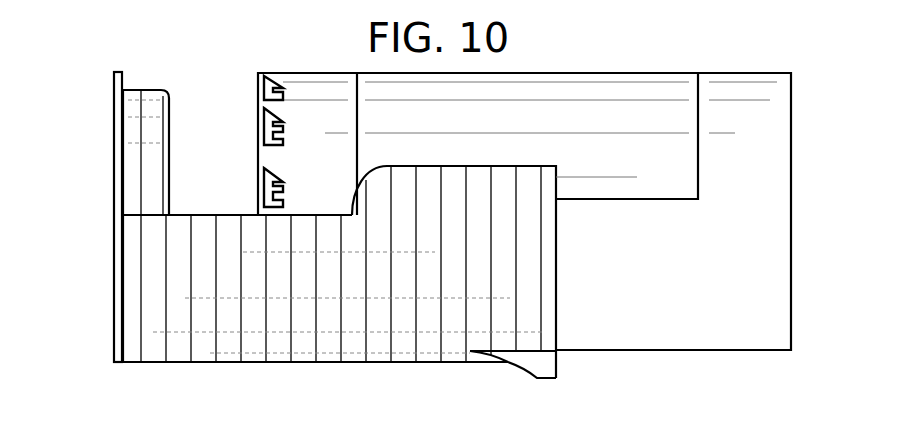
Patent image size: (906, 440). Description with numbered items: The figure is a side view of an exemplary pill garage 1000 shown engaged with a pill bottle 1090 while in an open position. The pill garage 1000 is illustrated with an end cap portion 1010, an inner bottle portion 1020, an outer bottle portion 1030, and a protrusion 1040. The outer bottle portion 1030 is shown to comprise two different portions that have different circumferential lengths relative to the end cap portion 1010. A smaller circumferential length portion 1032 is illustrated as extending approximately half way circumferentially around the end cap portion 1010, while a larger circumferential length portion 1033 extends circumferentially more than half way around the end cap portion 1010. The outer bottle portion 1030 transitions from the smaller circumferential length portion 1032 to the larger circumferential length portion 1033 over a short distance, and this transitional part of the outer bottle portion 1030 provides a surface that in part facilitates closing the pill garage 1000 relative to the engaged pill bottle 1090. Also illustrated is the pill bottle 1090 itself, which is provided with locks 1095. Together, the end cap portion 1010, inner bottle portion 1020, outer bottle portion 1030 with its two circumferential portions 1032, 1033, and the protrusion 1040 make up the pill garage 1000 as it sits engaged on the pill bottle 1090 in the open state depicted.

The pill garage 1000 is at (80, 356).
The end cap portion 1010 is at (118, 71).
The inner bottle portion 1020 is at (158, 90).
The outer bottle portion 1030 is at (178, 363).
The smaller circumferential length portion 1032 is at (228, 214).
The larger circumferential length portion 1033 is at (522, 165).
The protrusion 1040 is at (548, 379).
The pill bottle 1090 is at (790, 349).
The locks 1095 is at (265, 172).